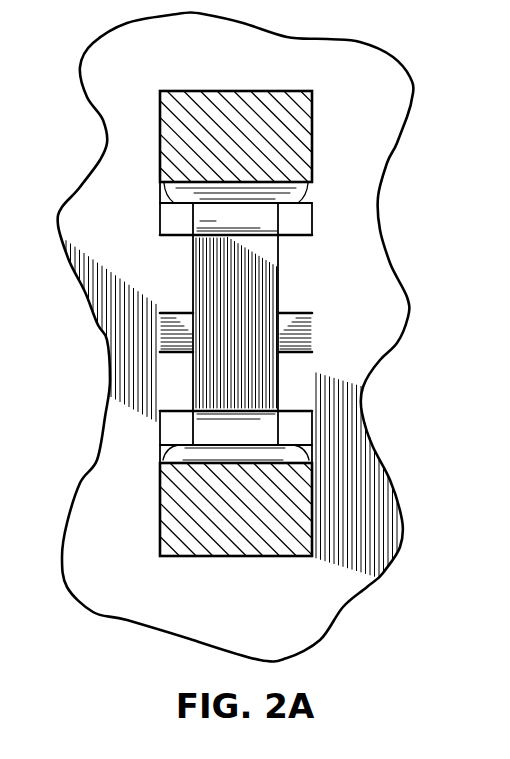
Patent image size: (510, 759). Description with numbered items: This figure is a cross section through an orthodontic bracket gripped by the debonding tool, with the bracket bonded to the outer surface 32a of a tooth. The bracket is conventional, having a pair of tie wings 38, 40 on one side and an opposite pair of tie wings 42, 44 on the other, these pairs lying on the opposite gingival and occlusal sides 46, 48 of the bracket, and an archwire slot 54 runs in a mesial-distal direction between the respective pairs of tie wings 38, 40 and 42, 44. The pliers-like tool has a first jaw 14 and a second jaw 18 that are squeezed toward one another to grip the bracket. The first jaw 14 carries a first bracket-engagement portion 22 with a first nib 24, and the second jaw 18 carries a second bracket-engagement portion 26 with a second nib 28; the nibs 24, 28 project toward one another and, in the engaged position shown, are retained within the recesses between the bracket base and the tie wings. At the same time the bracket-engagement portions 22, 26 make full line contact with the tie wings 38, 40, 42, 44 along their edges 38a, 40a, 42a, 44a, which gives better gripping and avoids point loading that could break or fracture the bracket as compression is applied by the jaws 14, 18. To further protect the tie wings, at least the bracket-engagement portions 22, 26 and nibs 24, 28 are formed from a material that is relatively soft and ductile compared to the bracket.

The first jaw 14 is at (293, 547).
The second jaw 18 is at (293, 110).
The first bracket-engagement portion 22 is at (213, 450).
The first nib 24 is at (252, 430).
The second bracket-engagement portion 26 is at (267, 195).
The second nib 28 is at (218, 215).
The outer surface of tooth 32a is at (368, 146).
The tie wing 38 is at (170, 225).
The edge of tie wing 38a is at (160, 183).
The tie wing 40 is at (298, 214).
The edge of tie wing 40a is at (300, 190).
The tie wing 42 is at (172, 420).
The edge of tie wing 42a is at (160, 460).
The tie wing 44 is at (300, 423).
The edge of tie wing 44a is at (305, 457).
The gingival side 46 is at (152, 467).
The occlusal side 48 is at (158, 165).
The archwire slot 54 is at (160, 336).